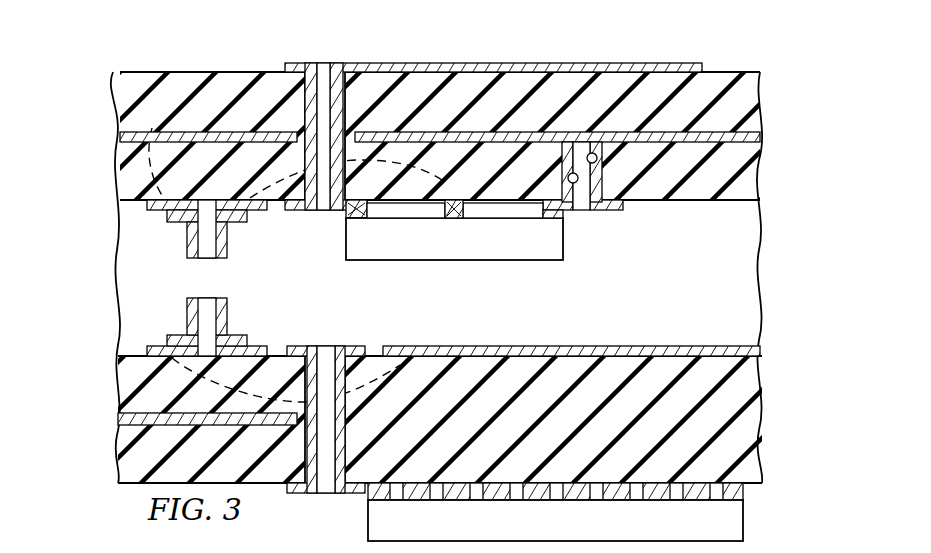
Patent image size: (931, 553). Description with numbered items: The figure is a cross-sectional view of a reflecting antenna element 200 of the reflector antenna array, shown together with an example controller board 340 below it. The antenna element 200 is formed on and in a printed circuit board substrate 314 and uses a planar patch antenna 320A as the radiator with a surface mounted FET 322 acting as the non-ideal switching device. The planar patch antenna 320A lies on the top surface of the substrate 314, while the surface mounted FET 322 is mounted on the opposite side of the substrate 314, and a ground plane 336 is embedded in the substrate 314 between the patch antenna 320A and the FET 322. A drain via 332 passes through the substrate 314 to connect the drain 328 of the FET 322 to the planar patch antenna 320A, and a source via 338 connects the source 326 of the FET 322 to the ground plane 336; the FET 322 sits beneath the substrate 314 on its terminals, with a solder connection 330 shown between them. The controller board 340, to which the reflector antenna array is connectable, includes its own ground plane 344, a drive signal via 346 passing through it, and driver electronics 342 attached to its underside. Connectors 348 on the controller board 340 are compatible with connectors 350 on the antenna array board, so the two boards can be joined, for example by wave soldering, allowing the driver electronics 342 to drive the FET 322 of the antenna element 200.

The antenna element 200 is at (90, 373).
The printed circuit board substrate 314 is at (117, 104).
The planar patch antenna 320A is at (299, 63).
The surface mounted FET 322 is at (346, 243).
The source 326 is at (564, 215).
The drain 328 is at (342, 212).
The solder bump 330 is at (469, 220).
The drain via 332 is at (307, 92).
The ground plane 336 is at (117, 135).
The source via 338 is at (568, 179).
The controller board 340 is at (648, 334).
The driver electronics 342 is at (745, 522).
The ground plane 344 is at (762, 351).
The drive signal via 346 is at (328, 356).
The connectors 348 is at (188, 320).
The connectors 350 is at (188, 242).